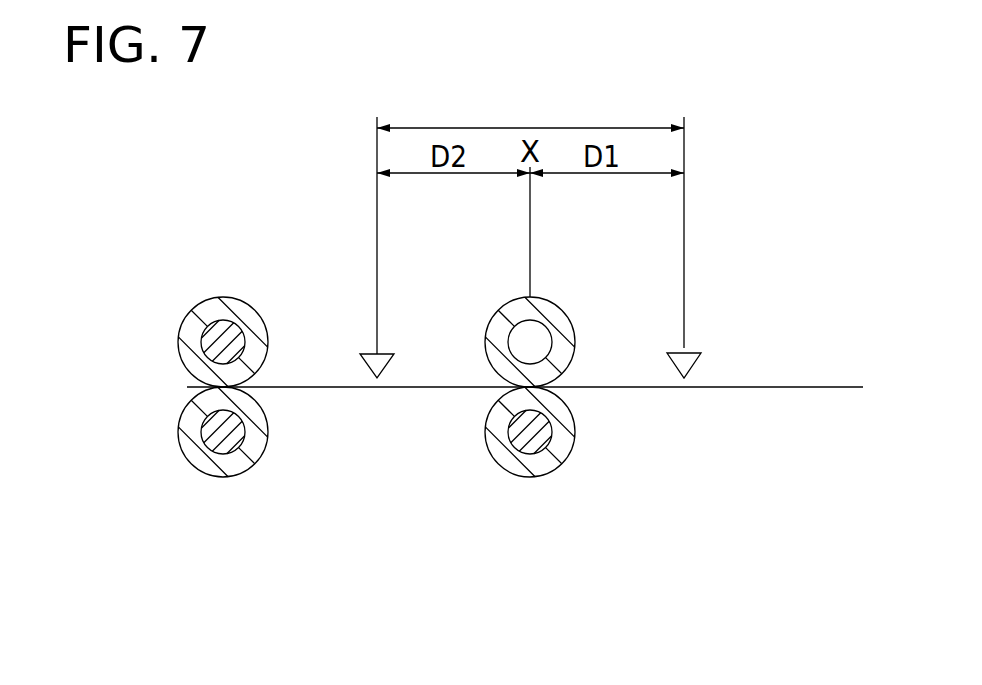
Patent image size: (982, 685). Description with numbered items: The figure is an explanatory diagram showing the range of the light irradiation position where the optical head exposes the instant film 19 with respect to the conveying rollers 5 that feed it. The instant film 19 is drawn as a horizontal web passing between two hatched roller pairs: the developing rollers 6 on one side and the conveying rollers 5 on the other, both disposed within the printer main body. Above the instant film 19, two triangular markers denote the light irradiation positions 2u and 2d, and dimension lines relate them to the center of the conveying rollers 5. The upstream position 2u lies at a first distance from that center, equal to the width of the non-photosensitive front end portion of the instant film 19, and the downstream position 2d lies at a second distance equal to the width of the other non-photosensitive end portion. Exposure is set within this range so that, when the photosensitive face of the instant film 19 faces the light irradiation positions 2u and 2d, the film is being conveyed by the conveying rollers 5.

The light irradiation position 2u is at (363, 350).
The light irradiation position 2d is at (703, 347).
The instant film 19 is at (428, 388).
The developing rollers 6 is at (187, 468).
The conveying rollers 5 is at (555, 474).